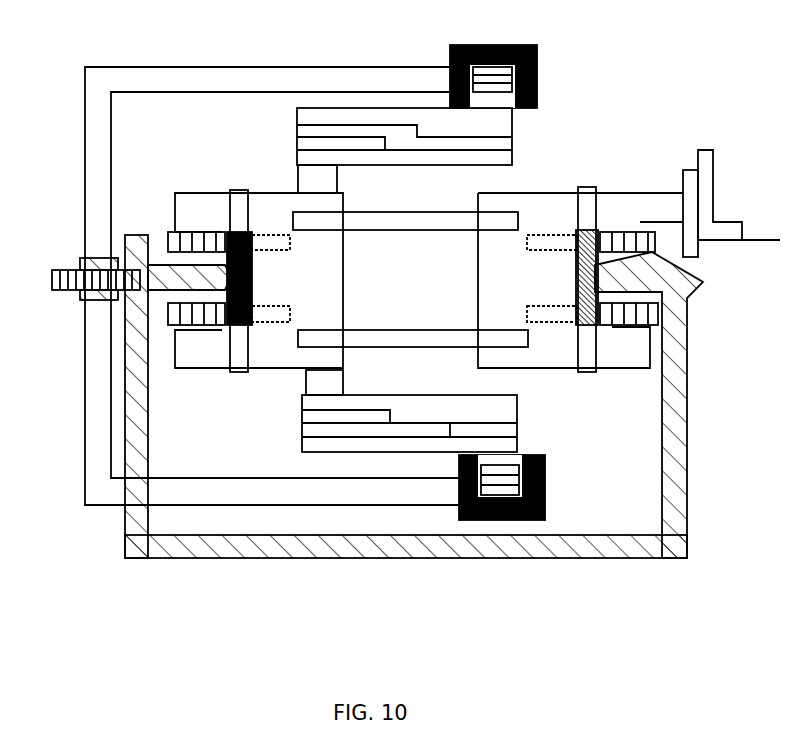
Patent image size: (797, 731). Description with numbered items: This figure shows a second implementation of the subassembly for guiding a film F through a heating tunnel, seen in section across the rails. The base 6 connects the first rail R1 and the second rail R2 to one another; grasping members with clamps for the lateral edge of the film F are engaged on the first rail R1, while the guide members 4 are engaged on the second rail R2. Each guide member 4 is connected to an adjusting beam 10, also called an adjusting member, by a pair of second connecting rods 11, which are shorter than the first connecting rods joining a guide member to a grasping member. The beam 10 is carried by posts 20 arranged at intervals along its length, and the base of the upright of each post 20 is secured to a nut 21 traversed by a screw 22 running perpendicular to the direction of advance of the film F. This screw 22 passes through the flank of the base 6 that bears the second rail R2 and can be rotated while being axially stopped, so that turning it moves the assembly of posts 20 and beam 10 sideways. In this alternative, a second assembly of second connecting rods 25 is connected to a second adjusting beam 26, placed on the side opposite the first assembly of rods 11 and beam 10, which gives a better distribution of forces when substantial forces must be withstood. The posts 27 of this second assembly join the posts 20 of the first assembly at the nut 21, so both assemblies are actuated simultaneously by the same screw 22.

The guide member 4 is at (267, 193).
The base 6 is at (690, 487).
The adjusting beam 10 is at (448, 53).
The second connecting rods 11 is at (381, 140).
The posts 20 is at (83, 80).
The nut 21 is at (75, 262).
The screw 22 is at (62, 262).
The second connecting rods 25 is at (383, 452).
The second adjusting beam 26 is at (547, 485).
The posts 27 is at (83, 493).
The first guide rail R1 is at (600, 347).
The second guide rail R2 is at (238, 356).
The film F is at (767, 238).